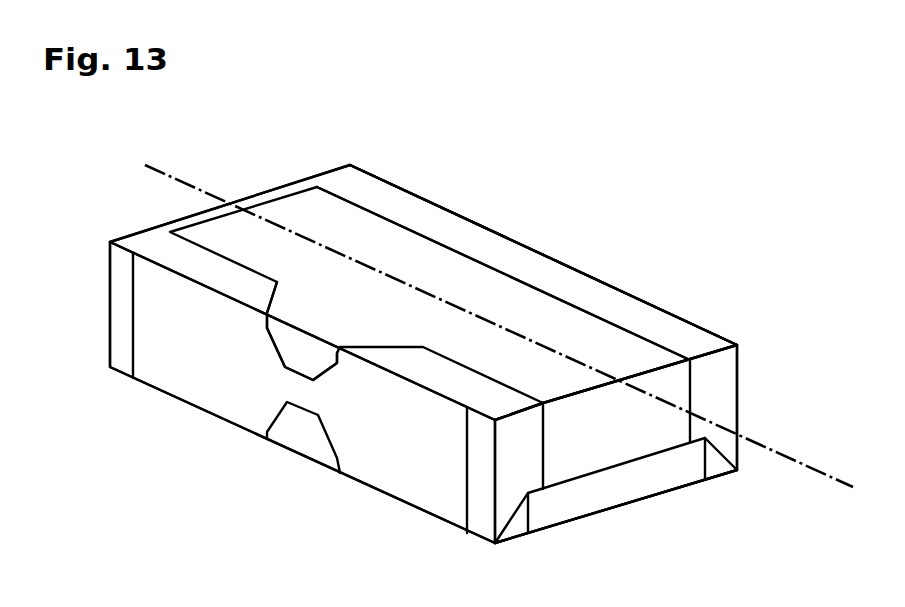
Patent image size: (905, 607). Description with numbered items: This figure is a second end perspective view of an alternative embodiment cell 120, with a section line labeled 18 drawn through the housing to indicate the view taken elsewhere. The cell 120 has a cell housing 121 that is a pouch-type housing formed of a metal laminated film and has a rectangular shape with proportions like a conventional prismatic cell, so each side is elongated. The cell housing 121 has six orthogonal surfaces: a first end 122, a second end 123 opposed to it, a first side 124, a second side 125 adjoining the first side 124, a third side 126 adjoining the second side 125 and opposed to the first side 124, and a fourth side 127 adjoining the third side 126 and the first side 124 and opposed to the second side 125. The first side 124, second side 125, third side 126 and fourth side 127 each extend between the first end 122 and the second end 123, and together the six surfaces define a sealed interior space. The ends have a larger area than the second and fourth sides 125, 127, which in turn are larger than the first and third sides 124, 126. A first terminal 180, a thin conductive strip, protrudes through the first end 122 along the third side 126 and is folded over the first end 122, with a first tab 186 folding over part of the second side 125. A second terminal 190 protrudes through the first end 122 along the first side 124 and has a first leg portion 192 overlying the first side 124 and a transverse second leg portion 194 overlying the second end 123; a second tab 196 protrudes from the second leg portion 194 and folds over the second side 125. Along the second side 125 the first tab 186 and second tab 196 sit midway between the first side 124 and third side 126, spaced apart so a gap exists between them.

The section line 18- 18 is at (168, 189).
The cell 120 is at (700, 176).
The cell housing 121 is at (518, 258).
The first end 122 is at (638, 502).
The second end 123 is at (648, 318).
The first side 124 is at (720, 392).
The second side 125 is at (422, 460).
The third side 126 is at (283, 187).
The fourth side 127 is at (607, 282).
The first terminal 180 is at (221, 448).
The first tab 186 is at (302, 442).
The second terminal 190 is at (356, 275).
The first leg portion 192 is at (600, 448).
The second leg portion 194 is at (383, 240).
The second tab 196 is at (295, 347).